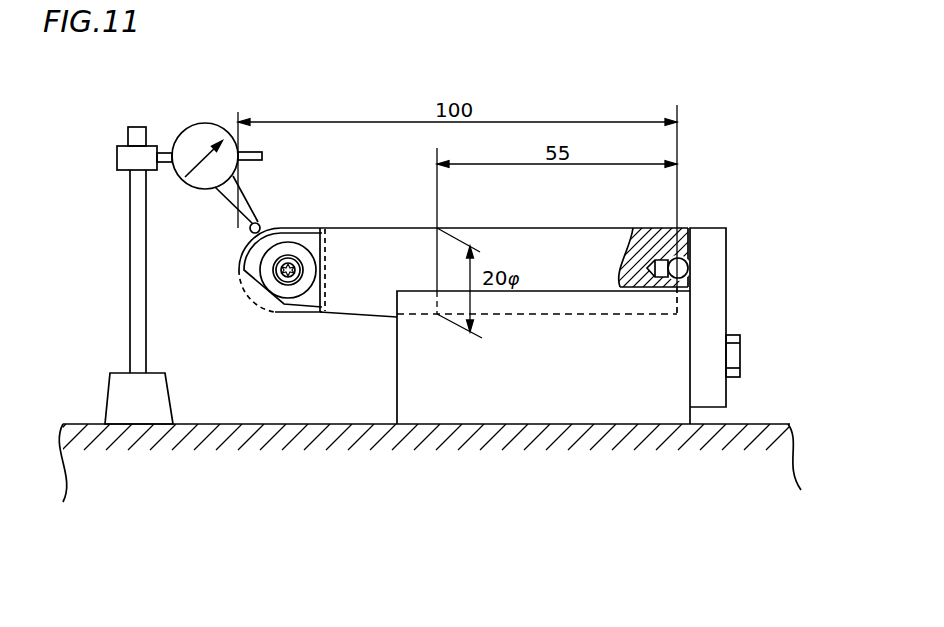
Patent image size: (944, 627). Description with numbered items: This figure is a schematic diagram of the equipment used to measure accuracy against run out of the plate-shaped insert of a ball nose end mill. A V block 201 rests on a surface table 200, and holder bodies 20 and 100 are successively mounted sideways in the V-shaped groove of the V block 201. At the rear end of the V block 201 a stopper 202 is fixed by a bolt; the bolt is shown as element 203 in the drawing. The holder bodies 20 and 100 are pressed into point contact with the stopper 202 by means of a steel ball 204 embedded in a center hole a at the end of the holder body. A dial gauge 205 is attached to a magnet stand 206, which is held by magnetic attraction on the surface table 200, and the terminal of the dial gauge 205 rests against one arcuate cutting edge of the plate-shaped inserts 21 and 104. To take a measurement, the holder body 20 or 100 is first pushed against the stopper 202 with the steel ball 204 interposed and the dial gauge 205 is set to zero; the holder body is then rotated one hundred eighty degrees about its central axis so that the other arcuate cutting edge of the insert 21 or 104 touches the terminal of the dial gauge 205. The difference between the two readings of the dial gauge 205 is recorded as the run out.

The holder body 20 is at (470, 263).
The holder body 100 is at (470, 263).
The plate-shaped insert 21 is at (262, 302).
The plate-shaped insert 104 is at (252, 300).
The center hole a is at (660, 227).
The surface table 200 is at (270, 457).
The V block 201 is at (555, 392).
The stopper 202 is at (710, 257).
The bolt 203 is at (733, 352).
The steel ball 204 is at (680, 258).
The dial gauge 205 is at (188, 140).
The magnet stand 206 is at (135, 397).